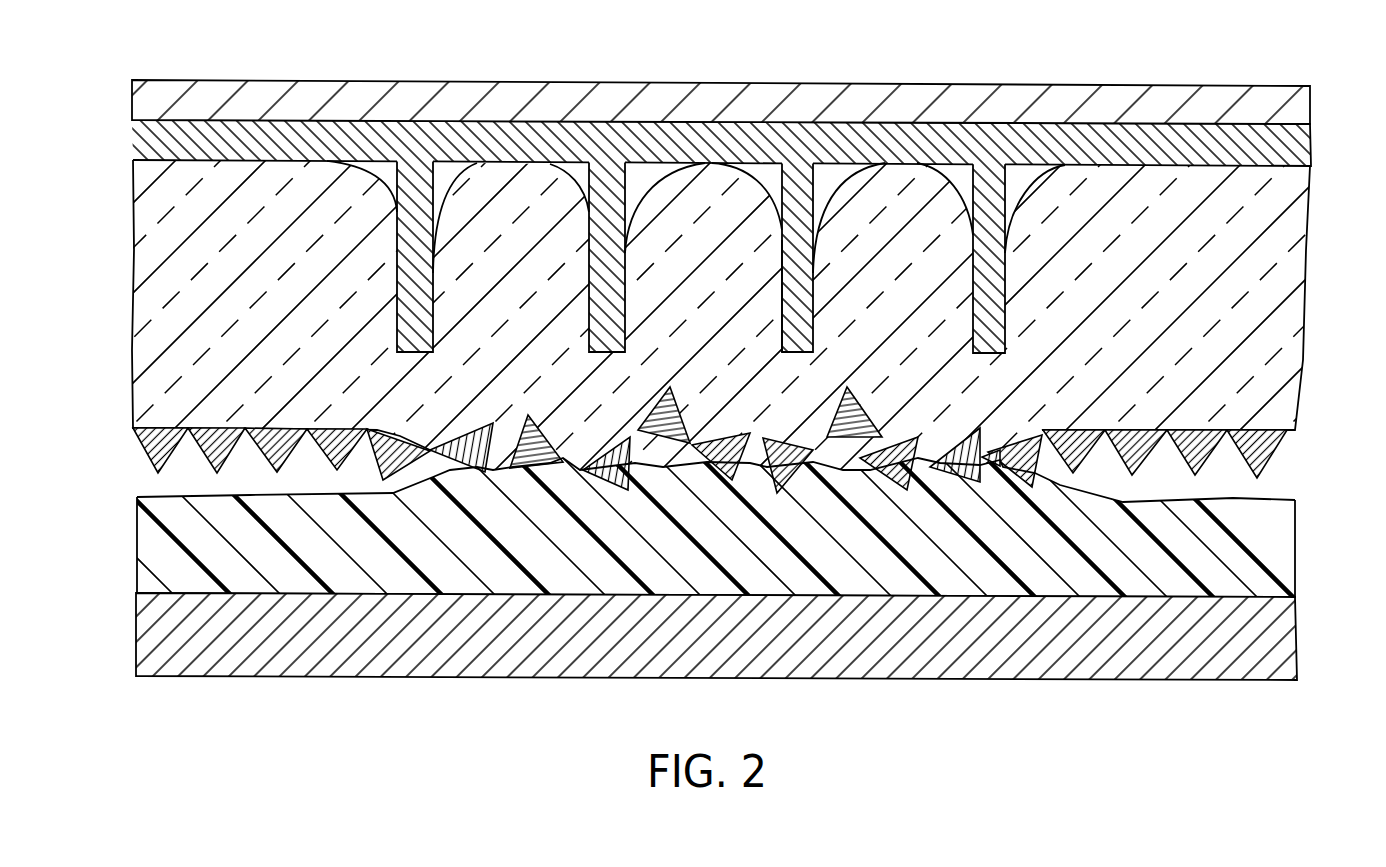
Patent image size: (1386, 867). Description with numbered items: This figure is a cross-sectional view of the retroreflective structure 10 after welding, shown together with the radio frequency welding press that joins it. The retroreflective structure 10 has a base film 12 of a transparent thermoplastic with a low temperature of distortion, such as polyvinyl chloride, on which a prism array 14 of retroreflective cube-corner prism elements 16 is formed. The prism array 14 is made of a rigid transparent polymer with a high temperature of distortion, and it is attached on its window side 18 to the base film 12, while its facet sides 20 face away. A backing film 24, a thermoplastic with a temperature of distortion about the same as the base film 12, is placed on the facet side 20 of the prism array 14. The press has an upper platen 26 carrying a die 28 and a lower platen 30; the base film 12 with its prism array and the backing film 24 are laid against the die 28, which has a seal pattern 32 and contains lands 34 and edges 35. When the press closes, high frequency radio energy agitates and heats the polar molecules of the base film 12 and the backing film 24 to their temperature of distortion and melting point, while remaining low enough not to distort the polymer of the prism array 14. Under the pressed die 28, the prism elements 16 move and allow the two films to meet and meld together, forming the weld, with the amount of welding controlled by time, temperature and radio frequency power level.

The retroreflective structure 10 is at (693, 382).
The base film 12 is at (133, 288).
The prism array 14 is at (1270, 453).
The retroreflective cube-corner prism elements 16 is at (133, 453).
The window side 18 is at (168, 425).
The facet sides 20 is at (158, 477).
The backing film 24 is at (137, 572).
The upper platen 26 is at (560, 82).
The die 28 is at (132, 138).
The lower platen 30 is at (430, 680).
The seal pattern 32 is at (992, 362).
The lands 34 is at (954, 176).
The edges 35 is at (782, 313).